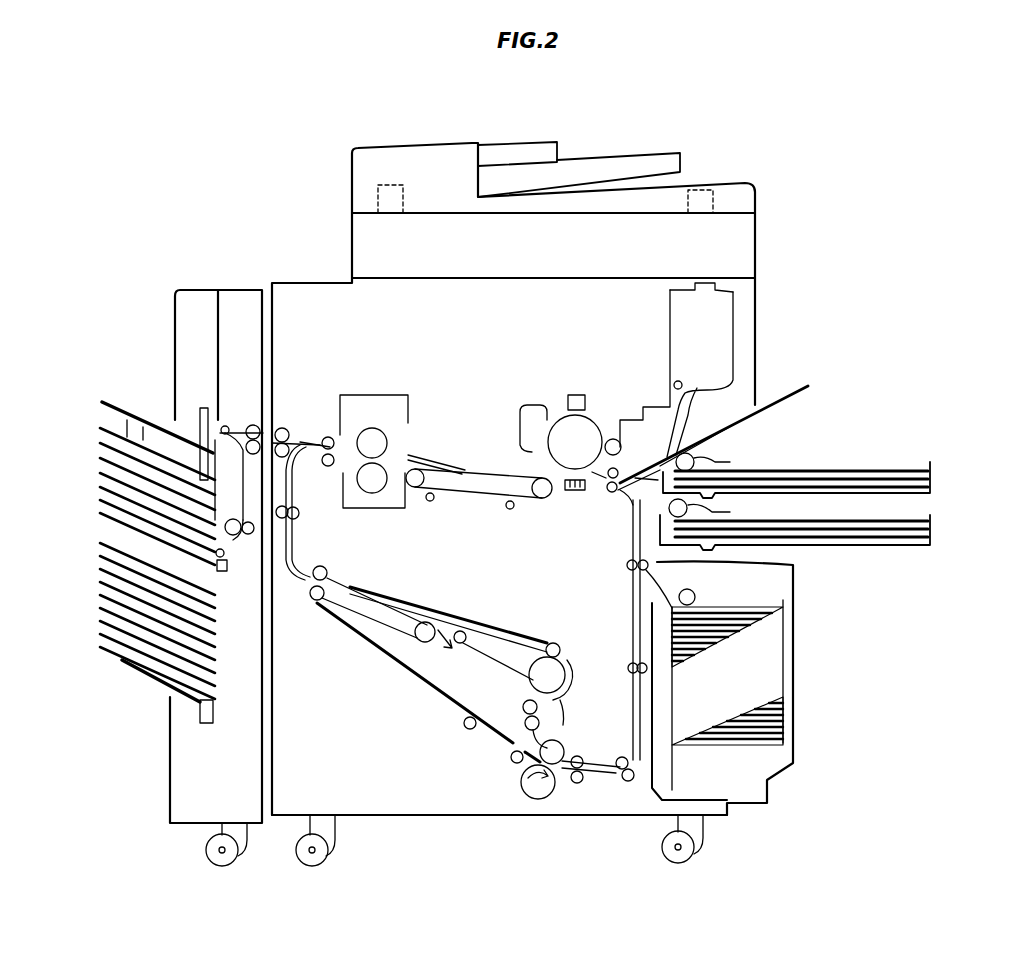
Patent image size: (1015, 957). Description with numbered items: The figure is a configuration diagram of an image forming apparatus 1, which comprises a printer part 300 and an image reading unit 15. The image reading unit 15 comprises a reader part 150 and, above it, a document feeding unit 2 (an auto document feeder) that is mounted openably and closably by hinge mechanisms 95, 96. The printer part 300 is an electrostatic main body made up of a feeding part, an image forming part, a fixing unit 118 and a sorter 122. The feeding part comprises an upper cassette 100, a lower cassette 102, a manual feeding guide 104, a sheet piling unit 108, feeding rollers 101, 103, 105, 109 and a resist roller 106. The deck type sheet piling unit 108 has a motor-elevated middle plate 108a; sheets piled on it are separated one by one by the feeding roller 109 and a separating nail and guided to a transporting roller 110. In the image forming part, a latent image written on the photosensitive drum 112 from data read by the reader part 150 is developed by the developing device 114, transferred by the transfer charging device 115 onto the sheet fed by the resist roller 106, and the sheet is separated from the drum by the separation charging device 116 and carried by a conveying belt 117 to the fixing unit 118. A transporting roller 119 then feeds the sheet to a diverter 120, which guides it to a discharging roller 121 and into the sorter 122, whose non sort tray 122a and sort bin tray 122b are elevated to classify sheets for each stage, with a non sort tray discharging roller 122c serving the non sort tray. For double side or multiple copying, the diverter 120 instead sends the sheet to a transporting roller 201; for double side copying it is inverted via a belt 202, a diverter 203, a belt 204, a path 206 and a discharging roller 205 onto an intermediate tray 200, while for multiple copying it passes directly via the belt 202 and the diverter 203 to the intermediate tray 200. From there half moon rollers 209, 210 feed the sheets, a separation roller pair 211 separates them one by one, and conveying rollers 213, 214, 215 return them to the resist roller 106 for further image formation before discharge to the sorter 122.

The image forming apparatus 1 is at (115, 765).
The document feeding unit 2 is at (455, 167).
The image reading unit 15 is at (768, 178).
The hinge mechanism 95 is at (703, 192).
The hinge mechanism 96 is at (391, 185).
The upper cassette 100 is at (932, 470).
The feeding roller 101 is at (738, 460).
The lower cassette 102 is at (932, 531).
The feeding roller 103 is at (732, 513).
The manual feeding guide 104 is at (806, 392).
The feeding roller 105 is at (702, 384).
The resist roller 106 is at (612, 493).
The sheet piling unit 108 is at (770, 688).
The middle plate 108a is at (797, 746).
The feeding roller 109 is at (696, 598).
The transporting roller 110 is at (622, 569).
The photosensitive drum 112 is at (557, 425).
The developing device 114 is at (640, 407).
The transfer charging device 115 is at (580, 495).
The separation charging device 116 is at (545, 500).
The conveying belt 117 is at (478, 468).
The fixing unit 118 is at (408, 418).
The transporting roller 119 is at (327, 467).
The diverter 120 is at (307, 440).
The discharging roller 121 is at (284, 425).
The sorter 122 is at (141, 525).
The non sort tray 122a is at (120, 405).
The sort bin tray 122b is at (100, 556).
The non sort tray discharging roller 122c is at (223, 425).
The reader part 150 is at (748, 256).
The intermediate tray 200 is at (410, 674).
The transporting roller 201 is at (298, 518).
The belt 202 is at (360, 585).
The diverter 203 is at (453, 620).
The belt 204 is at (546, 656).
The discharging roller 205 is at (524, 705).
The path 206 is at (570, 688).
The half moon roller 209 is at (465, 730).
The half moon roller 210 is at (512, 763).
The separation roller pair 211 is at (548, 808).
The conveying roller 213 is at (562, 800).
The conveying roller 214 is at (620, 758).
The conveying roller 215 is at (630, 663).
The printer part 300 is at (802, 298).